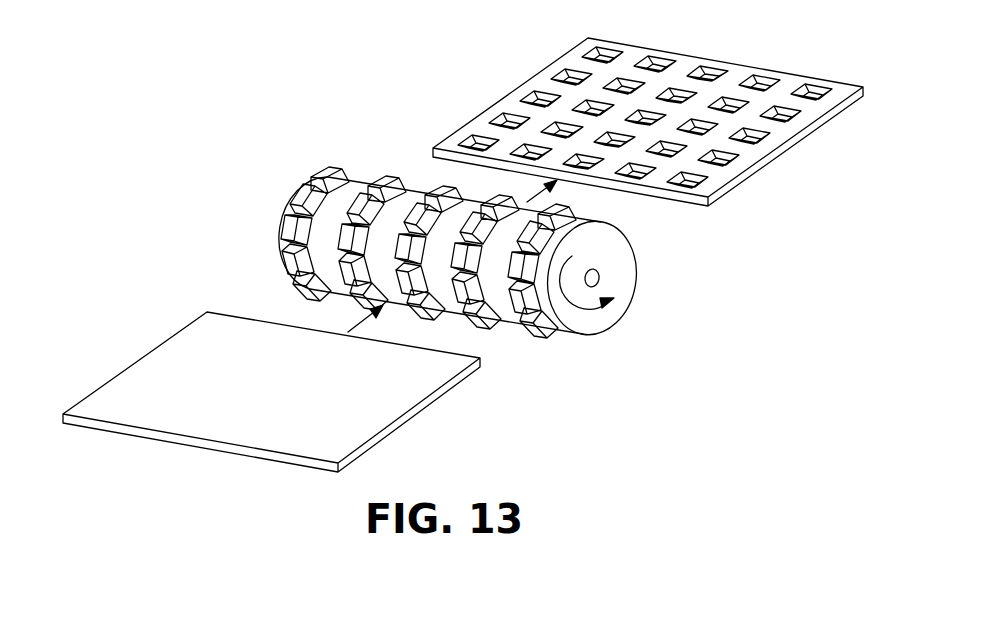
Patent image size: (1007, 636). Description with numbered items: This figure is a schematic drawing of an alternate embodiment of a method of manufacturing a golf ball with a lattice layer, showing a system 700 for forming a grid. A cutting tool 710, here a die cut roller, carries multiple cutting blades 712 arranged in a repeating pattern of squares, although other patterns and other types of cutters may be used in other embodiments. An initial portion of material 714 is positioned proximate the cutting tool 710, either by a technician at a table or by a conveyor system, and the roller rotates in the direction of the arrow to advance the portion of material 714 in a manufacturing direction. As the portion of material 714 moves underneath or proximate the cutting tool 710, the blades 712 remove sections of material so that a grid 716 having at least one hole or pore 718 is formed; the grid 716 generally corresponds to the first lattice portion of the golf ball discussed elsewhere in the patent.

The system 700 is at (312, 77).
The cutting tool 710 is at (425, 274).
The cutting blades 712 is at (283, 259).
The portion of material 714 is at (392, 403).
The grid 716 is at (648, 119).
The pore 718 is at (740, 157).